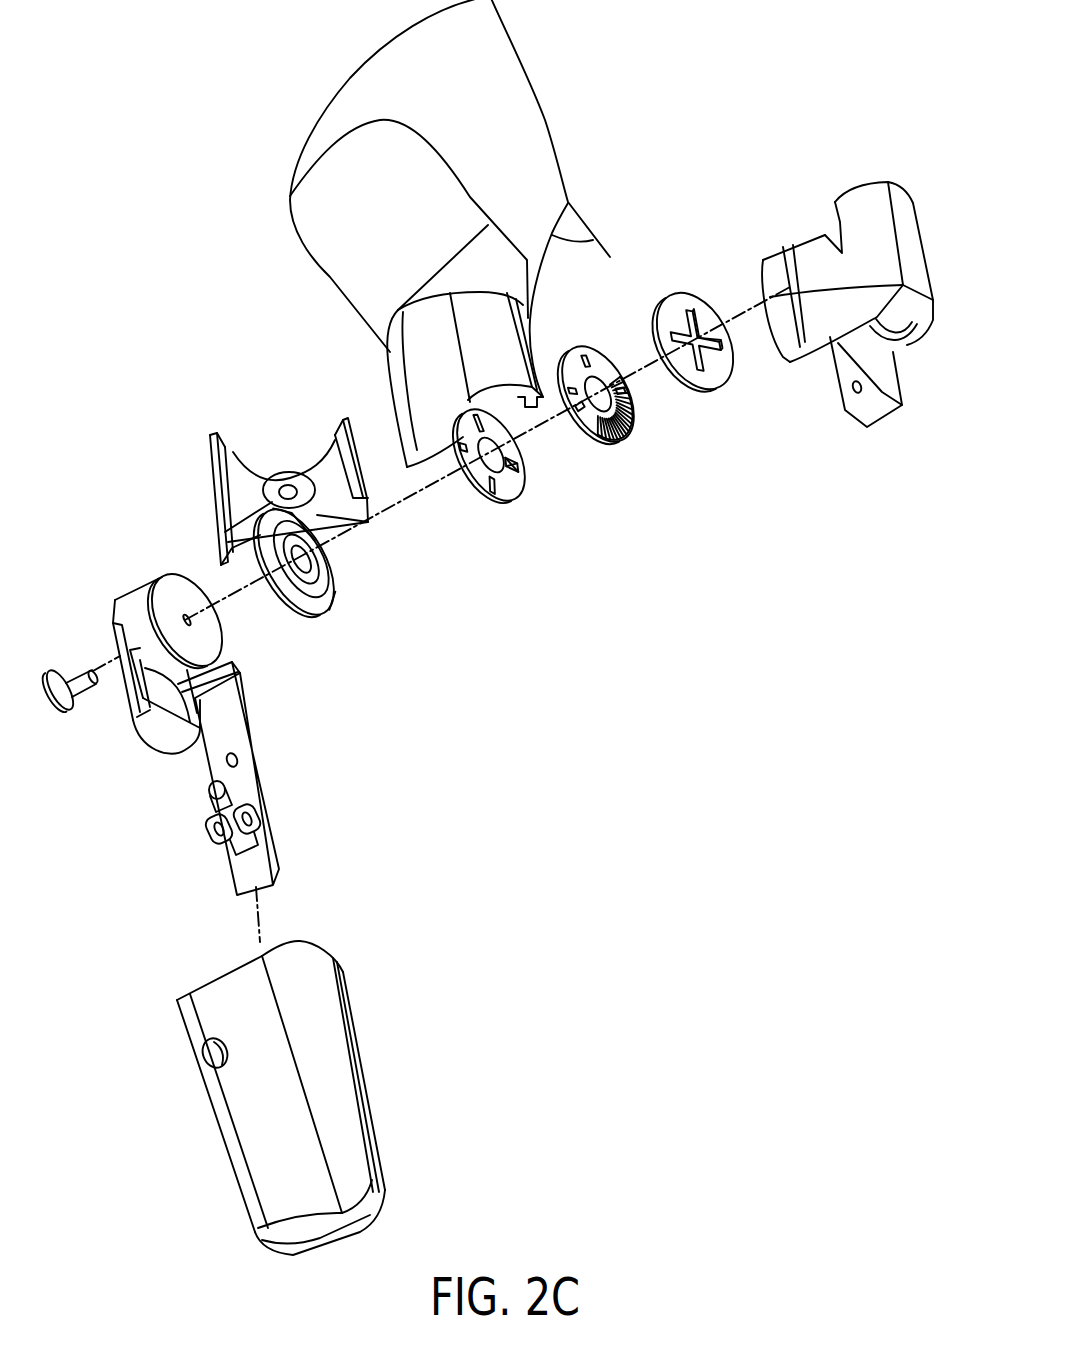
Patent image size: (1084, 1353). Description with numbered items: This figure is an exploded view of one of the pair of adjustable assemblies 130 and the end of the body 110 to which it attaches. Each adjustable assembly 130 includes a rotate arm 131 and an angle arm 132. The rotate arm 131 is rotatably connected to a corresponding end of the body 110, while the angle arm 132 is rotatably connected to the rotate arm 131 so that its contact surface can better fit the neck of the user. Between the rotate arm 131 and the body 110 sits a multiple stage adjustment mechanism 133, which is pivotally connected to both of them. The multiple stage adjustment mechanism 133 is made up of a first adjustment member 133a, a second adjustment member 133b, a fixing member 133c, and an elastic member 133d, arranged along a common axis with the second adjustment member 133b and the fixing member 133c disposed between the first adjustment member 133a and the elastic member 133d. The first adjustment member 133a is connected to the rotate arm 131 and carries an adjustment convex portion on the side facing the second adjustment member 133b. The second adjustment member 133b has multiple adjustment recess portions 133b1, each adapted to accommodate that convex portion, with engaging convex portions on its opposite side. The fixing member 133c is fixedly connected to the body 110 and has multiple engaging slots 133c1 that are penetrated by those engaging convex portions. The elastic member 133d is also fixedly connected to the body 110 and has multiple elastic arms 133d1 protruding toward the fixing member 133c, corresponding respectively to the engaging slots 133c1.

The body 110 is at (385, 67).
The adjustable assembly 130 is at (758, 152).
The rotate arm 131 is at (907, 230).
The angle arm 132 is at (335, 1005).
The multiple stage adjustment mechanism 133 is at (645, 498).
The first adjustment member 133a is at (723, 370).
The second adjustment member 133b is at (603, 362).
The adjustment recess portions 133b1 is at (645, 393).
The fixing member 133c is at (510, 485).
The engaging slots 133c1 is at (528, 458).
The elastic member 133d is at (328, 598).
The elastic arms 133d1 is at (330, 565).